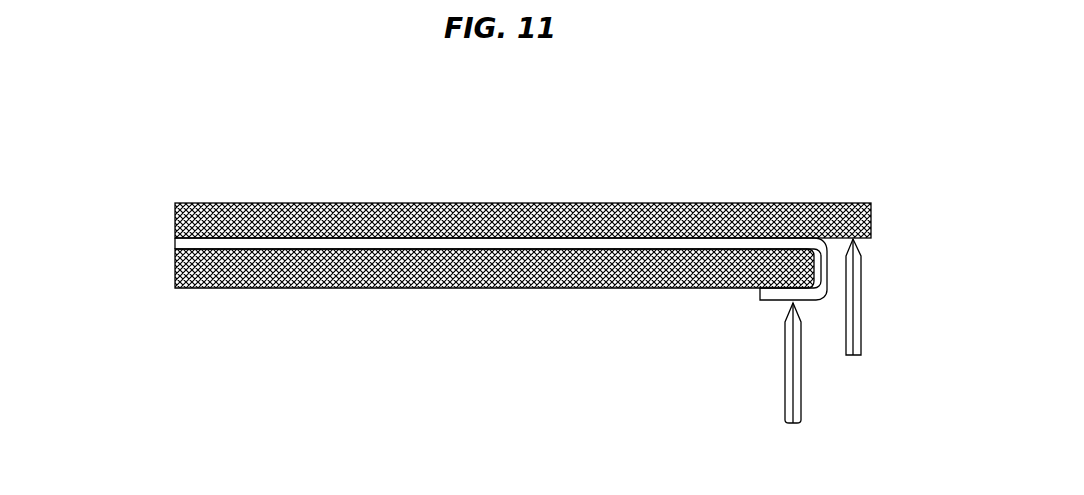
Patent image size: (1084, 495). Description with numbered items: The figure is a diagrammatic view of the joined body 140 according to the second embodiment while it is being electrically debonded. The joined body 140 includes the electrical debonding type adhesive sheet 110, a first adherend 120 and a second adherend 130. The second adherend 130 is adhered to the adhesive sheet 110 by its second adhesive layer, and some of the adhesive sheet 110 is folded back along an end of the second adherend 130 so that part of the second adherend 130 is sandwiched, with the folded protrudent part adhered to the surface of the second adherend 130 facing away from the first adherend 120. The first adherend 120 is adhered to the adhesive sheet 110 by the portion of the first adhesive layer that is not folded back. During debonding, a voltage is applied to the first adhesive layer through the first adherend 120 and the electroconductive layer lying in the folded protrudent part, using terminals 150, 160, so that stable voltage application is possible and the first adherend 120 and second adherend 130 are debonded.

The joined body 140 is at (302, 170).
The first adherend 120 is at (175, 210).
The electrical debonding type adhesive sheet 110 is at (175, 243).
The second adherend 130 is at (175, 281).
The terminal 150 is at (785, 387).
The terminal 160 is at (861, 330).